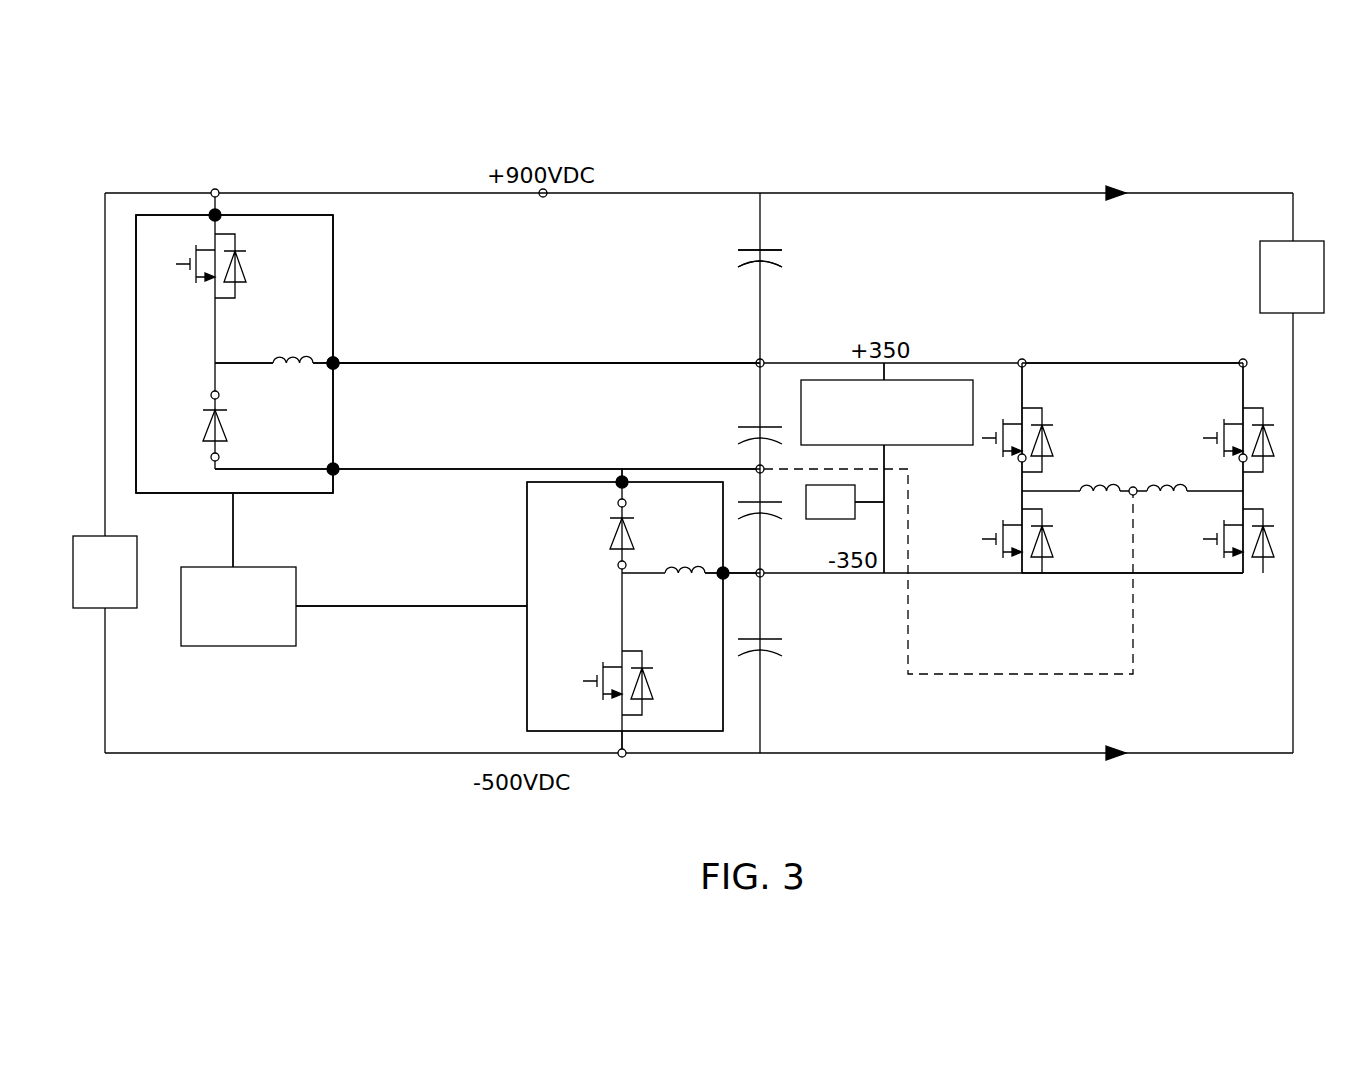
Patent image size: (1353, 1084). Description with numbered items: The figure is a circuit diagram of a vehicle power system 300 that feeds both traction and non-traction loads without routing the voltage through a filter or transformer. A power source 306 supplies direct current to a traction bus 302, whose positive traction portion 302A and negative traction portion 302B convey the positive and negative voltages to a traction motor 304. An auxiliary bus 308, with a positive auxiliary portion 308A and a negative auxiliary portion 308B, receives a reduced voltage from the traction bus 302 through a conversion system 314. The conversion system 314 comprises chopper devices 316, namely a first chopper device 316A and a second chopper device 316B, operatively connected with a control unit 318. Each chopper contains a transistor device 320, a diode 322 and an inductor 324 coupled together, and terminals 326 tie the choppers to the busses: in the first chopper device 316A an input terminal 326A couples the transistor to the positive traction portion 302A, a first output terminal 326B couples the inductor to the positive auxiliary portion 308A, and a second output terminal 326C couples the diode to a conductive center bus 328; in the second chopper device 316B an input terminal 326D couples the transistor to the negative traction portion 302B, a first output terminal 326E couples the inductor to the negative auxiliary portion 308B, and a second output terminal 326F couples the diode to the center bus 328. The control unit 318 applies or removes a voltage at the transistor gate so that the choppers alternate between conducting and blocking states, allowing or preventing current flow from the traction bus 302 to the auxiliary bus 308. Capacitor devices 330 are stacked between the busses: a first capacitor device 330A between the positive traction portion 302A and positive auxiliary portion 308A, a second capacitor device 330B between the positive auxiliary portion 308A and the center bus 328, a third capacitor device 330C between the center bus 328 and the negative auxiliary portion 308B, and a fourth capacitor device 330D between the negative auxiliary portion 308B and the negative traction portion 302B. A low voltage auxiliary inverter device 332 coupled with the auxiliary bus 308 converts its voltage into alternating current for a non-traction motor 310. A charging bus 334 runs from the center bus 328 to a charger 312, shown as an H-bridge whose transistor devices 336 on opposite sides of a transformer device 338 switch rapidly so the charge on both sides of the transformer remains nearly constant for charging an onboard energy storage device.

The power system 300 is at (1036, 117).
The traction bus 302 is at (692, 169).
The positive traction portion 302A is at (863, 190).
The negative traction portion 302B is at (920, 756).
The traction motor 304 is at (1292, 277).
The power source 306 is at (105, 572).
The auxiliary bus 308 is at (638, 345).
The positive auxiliary portion 308A is at (545, 360).
The negative auxiliary portion 308B is at (772, 577).
The non-traction motor 310 is at (845, 502).
The charger 312 is at (1243, 348).
The conversion system 314 is at (730, 798).
The chopper devices 316 is at (370, 252).
The chopper device 316A is at (180, 497).
The chopper device 316B is at (527, 500).
The control unit 318 is at (237, 650).
The transistor device 320 is at (282, 252).
The diode 322 is at (245, 424).
The inductor 324 is at (289, 345).
The terminals 326 is at (348, 375).
The input terminal 326A is at (218, 212).
The first output terminal 326B is at (336, 360).
The second output terminal 326C is at (336, 466).
The input terminal 326D is at (622, 758).
The first output terminal 326E is at (720, 570).
The second output terminal 326F is at (624, 478).
The center bus 328 is at (185, 270).
The capacitor devices 330 is at (714, 241).
The first capacitor device 330A is at (784, 250).
The second capacitor device 330B is at (740, 426).
The third capacitor device 330C is at (776, 522).
The fourth capacitor device 330D is at (784, 640).
The auxiliary inverter device 332 is at (958, 448).
The charging bus 334 is at (1033, 677).
The transistor devices 336 is at (1060, 404).
The transformer device 338 is at (1187, 463).